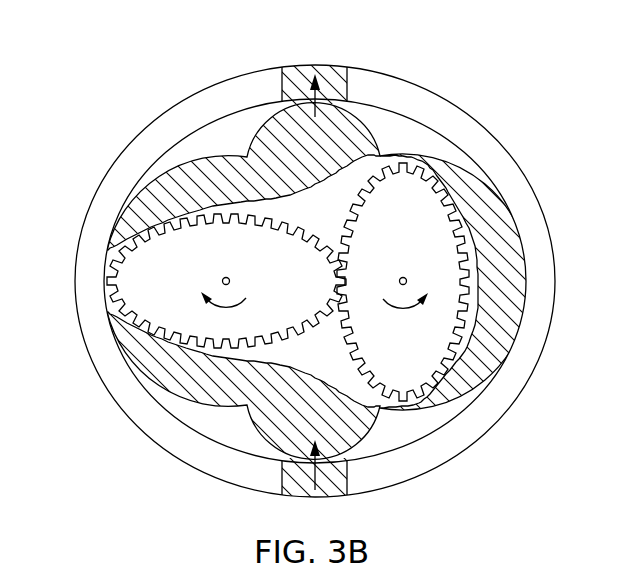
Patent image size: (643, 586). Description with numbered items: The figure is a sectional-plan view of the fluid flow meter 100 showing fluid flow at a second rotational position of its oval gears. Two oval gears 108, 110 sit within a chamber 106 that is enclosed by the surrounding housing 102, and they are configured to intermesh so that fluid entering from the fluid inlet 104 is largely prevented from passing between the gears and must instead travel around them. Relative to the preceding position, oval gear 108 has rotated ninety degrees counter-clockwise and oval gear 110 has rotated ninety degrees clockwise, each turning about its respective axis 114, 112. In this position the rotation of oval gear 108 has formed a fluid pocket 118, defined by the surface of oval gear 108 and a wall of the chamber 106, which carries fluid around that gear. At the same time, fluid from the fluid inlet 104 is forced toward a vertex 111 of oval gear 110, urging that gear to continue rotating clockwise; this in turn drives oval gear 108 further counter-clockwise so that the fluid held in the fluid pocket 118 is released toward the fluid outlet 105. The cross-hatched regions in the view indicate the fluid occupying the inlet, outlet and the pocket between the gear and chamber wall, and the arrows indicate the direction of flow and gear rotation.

The fluid flow meter 100 is at (141, 66).
The housing 102 is at (413, 110).
The fluid inlet 104 is at (340, 497).
The outlet port 105 is at (337, 62).
The chamber 106 is at (247, 412).
The oval gear 108 is at (420, 343).
The oval gear 110 is at (157, 297).
The vertex 111 is at (104, 283).
The second gear shaft 112 is at (410, 275).
The first gear shaft 114 is at (222, 279).
The fluid pocket 118 is at (505, 292).